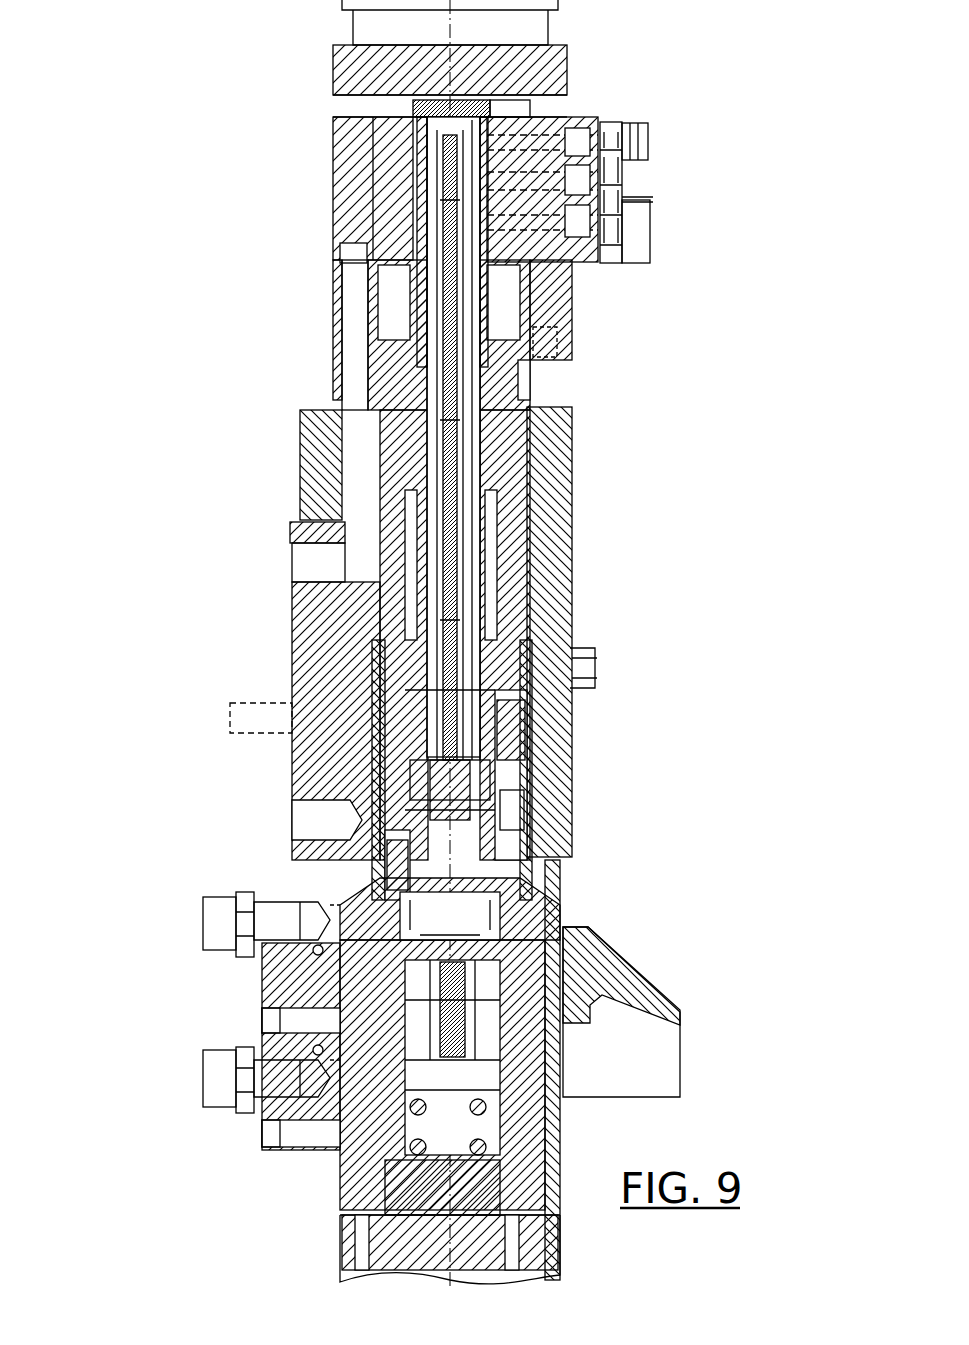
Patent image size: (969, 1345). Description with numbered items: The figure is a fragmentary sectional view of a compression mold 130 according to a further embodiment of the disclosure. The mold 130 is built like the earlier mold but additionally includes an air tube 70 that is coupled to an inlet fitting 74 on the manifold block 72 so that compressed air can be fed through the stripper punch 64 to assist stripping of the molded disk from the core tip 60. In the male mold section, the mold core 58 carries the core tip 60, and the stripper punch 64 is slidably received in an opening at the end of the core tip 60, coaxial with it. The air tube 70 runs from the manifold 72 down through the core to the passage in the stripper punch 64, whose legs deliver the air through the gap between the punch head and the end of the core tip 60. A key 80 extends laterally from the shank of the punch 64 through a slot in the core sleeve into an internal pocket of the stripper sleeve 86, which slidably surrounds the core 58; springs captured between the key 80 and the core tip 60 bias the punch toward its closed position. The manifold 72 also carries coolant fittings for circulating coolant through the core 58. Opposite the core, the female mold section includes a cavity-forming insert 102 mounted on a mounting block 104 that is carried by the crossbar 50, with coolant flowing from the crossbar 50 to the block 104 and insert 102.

The crossbar 50 is at (370, 1232).
The mold core 58 is at (378, 797).
The core tip 60 is at (525, 955).
The stripper punch 64 is at (520, 935).
The air tube 70 is at (452, 612).
The manifold 72 is at (575, 118).
The inlet fitting 74 is at (632, 135).
The key 80 is at (520, 810).
The stripper sleeve 86 is at (383, 842).
The cavity-forming insert 102 is at (335, 950).
The mounting block 104 is at (360, 1182).
The mold 130 is at (202, 1002).